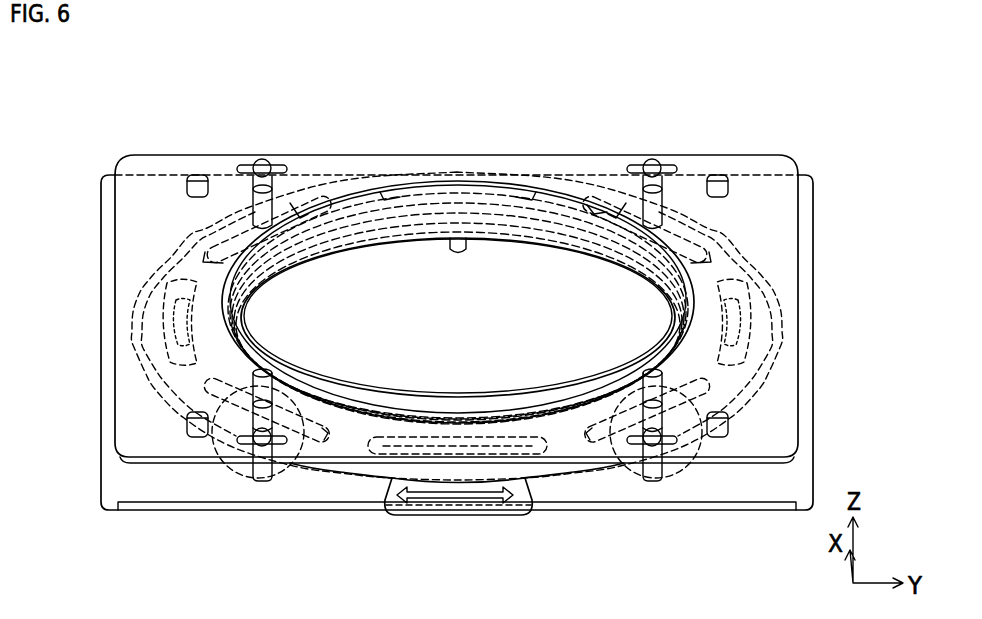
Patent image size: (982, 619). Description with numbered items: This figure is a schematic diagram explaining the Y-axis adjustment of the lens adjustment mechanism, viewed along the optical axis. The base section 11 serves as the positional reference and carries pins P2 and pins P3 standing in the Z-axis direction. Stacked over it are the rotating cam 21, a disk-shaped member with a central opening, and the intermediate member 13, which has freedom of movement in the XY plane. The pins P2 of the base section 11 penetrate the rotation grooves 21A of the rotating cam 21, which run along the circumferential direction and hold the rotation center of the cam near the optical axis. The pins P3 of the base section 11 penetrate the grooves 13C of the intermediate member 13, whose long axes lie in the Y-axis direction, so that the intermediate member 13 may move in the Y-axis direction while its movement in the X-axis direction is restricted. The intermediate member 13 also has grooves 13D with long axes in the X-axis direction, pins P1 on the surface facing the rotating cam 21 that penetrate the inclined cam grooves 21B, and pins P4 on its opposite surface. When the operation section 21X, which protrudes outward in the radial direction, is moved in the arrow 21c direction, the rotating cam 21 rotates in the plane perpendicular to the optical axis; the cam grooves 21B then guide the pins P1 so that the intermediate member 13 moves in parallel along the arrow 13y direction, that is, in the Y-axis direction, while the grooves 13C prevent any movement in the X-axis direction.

The base section 11 is at (813, 295).
The intermediate member 13 is at (798, 270).
The groove 13C is at (245, 167).
The groove 13D is at (197, 183).
The arrow direction 13y is at (476, 141).
The rotating cam 21 is at (515, 474).
The rotation groove 21A is at (160, 243).
The cam groove 21B is at (157, 350).
The operation section 21X is at (385, 507).
The arrow direction 21c is at (512, 559).
The pin P1 is at (165, 324).
The pin P2 is at (259, 204).
The pin P3 is at (262, 159).
The pin P4 is at (275, 205).